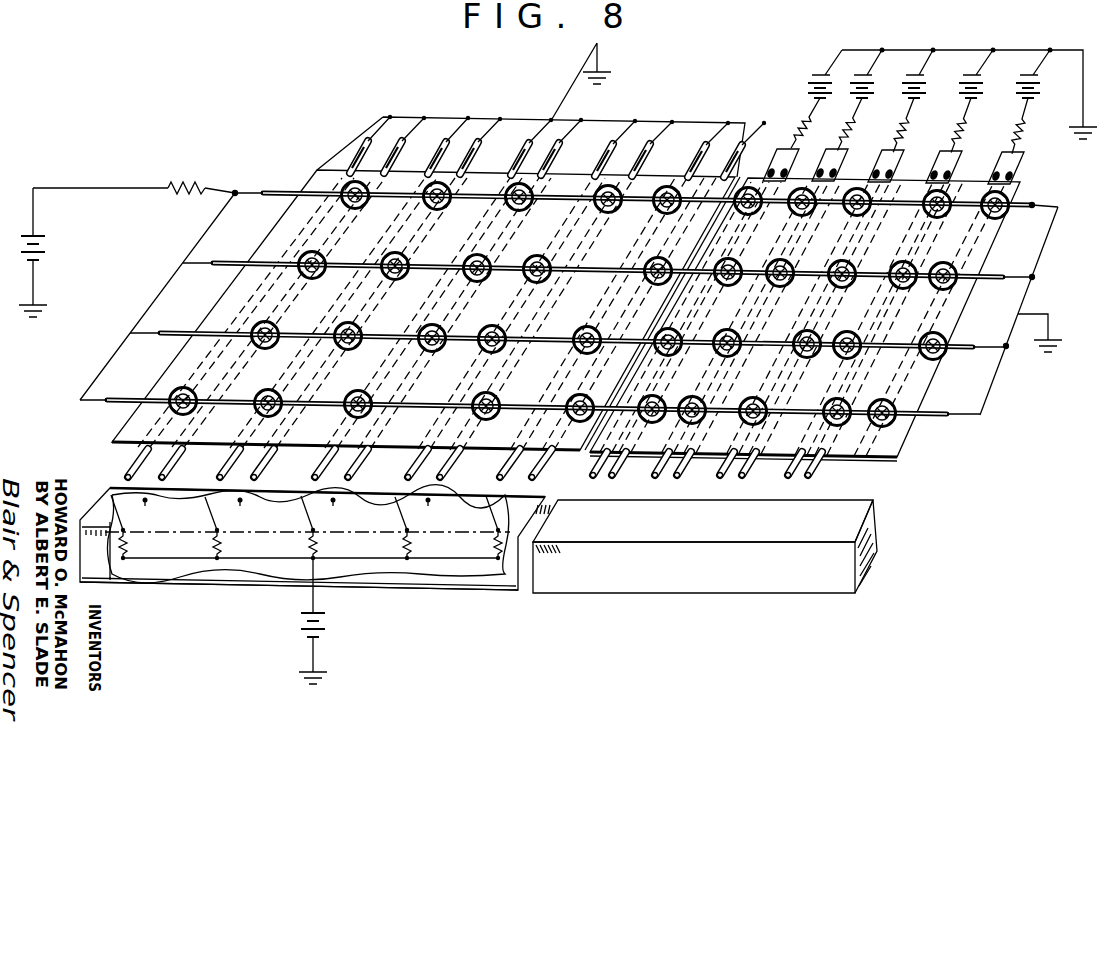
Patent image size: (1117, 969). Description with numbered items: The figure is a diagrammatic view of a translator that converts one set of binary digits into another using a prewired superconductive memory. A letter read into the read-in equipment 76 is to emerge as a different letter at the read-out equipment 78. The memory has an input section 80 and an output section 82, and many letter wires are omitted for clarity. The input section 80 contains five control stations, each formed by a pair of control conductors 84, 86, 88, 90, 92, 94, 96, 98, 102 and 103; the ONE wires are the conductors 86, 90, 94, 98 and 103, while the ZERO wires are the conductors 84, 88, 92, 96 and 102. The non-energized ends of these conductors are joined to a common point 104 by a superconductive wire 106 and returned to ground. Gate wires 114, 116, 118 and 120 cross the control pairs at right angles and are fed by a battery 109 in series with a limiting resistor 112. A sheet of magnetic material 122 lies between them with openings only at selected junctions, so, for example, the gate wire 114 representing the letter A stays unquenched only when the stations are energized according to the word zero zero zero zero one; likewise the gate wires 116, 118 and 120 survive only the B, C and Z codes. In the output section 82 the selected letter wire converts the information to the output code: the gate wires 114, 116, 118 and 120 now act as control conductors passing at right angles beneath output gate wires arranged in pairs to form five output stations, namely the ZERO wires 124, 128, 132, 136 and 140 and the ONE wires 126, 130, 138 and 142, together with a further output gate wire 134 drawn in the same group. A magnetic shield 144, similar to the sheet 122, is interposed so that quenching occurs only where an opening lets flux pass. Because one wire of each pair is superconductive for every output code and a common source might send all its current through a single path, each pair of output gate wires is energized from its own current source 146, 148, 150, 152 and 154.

The read-in equipment 76 is at (225, 591).
The read-out equipment 78 is at (676, 575).
The input section 80 is at (290, 166).
The output section 82 is at (912, 441).
The ZERO control conductor 84 is at (126, 468).
The ONE control conductor 86 is at (168, 464).
The ZERO control conductor 88 is at (227, 463).
The ONE control conductor 90 is at (260, 464).
The ZERO control conductor 92 is at (321, 465).
The ONE control conductor 94 is at (354, 464).
The ZERO control conductor 96 is at (413, 466).
The ONE control conductor 98 is at (446, 465).
The ZERO control conductor 102 is at (507, 467).
The ONE control conductor 103 is at (535, 456).
The common point 104 is at (550, 116).
The superconductive wire 106 is at (443, 118).
The battery 109 is at (47, 244).
The limiting resistor 112 is at (199, 186).
The gate wire 114 is at (268, 190).
The gate wire 116 is at (222, 262).
The gate wire 118 is at (172, 332).
The gate wire 120 is at (120, 398).
The sheet of magnetic material 122 is at (470, 312).
The ZERO output gate wire 124 is at (595, 466).
The ONE output gate wire 126 is at (630, 448).
The ZERO output gate wire 128 is at (663, 466).
The ONE output gate wire 130 is at (700, 448).
The ZERO output gate wire 132 is at (726, 466).
The output conductor 134 is at (760, 448).
The ZERO output gate wire 136 is at (795, 466).
The ONE output gate wire 138 is at (811, 482).
The ZERO output gate wire 140 is at (822, 452).
The ONE output gate wire 142 is at (878, 477).
The magnetic shield 144 is at (832, 321).
The current source 146 is at (805, 86).
The current source 148 is at (859, 70).
The current source 150 is at (909, 72).
The current source 152 is at (966, 70).
The current source 154 is at (1024, 72).